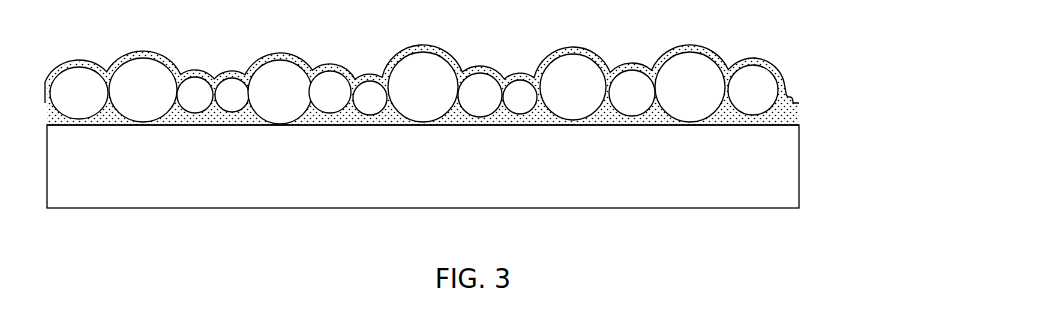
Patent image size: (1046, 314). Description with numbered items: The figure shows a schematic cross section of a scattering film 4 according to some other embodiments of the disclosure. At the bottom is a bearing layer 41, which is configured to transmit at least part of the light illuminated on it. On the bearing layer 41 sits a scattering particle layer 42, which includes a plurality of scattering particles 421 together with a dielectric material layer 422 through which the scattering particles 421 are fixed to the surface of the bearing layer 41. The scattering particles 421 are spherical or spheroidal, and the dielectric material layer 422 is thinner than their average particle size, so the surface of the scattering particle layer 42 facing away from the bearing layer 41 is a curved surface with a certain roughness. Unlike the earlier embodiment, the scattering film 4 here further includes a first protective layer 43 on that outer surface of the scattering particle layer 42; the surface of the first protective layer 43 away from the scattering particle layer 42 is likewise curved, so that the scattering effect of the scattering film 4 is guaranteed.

The scattering film 4 is at (493, 105).
The bearing layer 41 is at (800, 191).
The scattering particle layer 42 is at (476, 82).
The scattering particles 421 is at (761, 76).
The dielectric material layer 422 is at (799, 121).
The first protective layer 43 is at (748, 60).